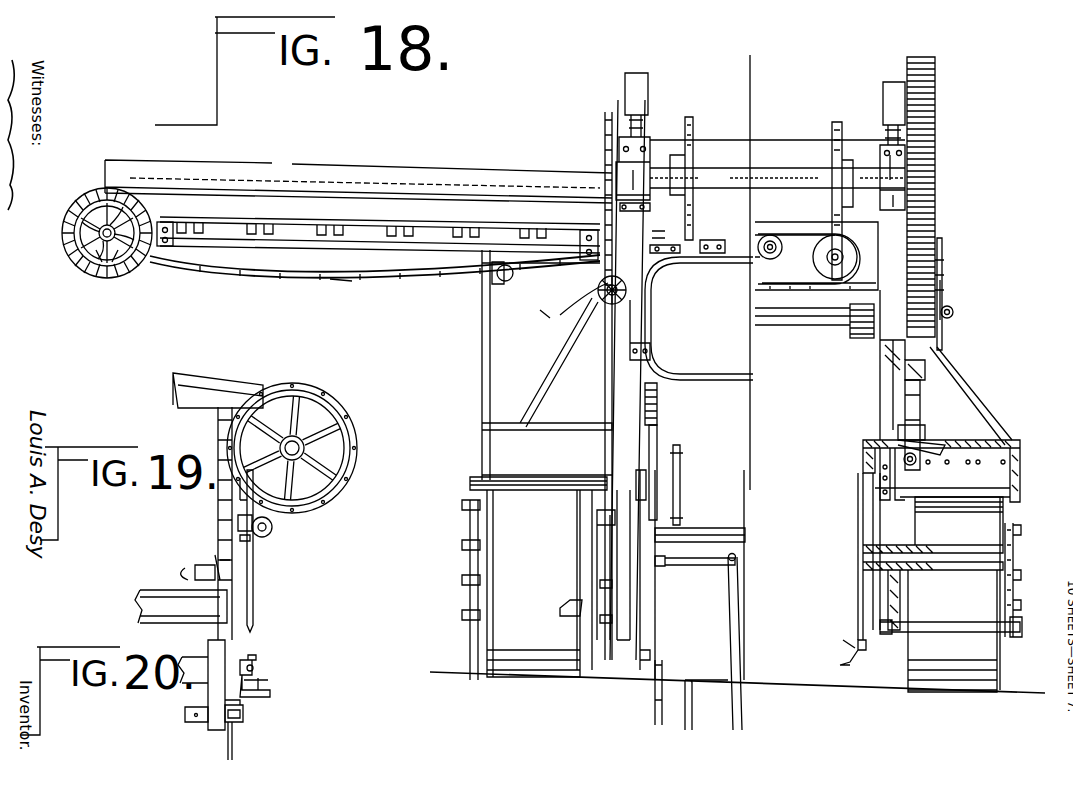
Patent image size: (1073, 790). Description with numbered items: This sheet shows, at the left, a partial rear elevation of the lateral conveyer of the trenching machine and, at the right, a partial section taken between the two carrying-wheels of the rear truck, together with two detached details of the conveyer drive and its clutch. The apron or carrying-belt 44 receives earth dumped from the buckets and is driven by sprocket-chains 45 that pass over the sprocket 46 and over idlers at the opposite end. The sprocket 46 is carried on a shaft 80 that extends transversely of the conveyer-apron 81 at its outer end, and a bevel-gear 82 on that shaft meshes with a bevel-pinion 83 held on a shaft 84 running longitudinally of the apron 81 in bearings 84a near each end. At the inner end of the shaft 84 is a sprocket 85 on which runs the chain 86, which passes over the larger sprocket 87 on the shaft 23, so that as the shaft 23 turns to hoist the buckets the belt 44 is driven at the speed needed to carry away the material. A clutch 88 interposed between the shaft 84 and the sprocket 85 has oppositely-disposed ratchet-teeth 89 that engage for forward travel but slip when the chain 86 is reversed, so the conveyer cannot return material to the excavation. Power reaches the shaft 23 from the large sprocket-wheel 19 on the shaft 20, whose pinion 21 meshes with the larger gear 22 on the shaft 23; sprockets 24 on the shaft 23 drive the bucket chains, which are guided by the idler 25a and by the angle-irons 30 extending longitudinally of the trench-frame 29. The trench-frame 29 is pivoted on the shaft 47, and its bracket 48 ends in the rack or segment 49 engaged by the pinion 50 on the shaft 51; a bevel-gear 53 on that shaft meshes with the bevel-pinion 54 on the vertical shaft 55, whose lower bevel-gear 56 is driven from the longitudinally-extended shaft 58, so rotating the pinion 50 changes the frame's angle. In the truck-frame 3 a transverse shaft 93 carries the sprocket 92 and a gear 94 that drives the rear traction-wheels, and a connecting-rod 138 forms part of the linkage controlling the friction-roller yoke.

In FIG. 18, the truck-frame 3 is at (1018, 612).
In FIG. 18, the large sprocket-wheel 19 is at (944, 262).
In FIG. 18, the shaft 20 is at (952, 308).
In FIG. 18, the pinion 21 is at (946, 300).
In FIG. 18, the gear 22 is at (936, 118).
In FIG. 18, the shaft 23 is at (776, 180).
In FIG. 18, the sprockets 24 is at (689, 115).
In FIG. 18, the idler 25a is at (682, 468).
In FIG. 18, the trench-frame 29 is at (652, 703).
In FIG. 18, the angle-irons 30 is at (668, 726).
In FIG. 18, the apron or carrying-belt 44 is at (246, 274).
In FIG. 18, the sprocket-chains 45 is at (316, 277).
In FIG. 18, the sprocket 46 is at (78, 265).
In FIG. 18, the shaft 47 is at (705, 528).
In FIG. 18, the bracket 48 is at (660, 447).
In FIG. 18, the rack or segment 49 is at (659, 410).
In FIG. 18, the pinion 50 is at (860, 340).
In FIG. 18, the shaft 51 is at (779, 327).
In FIG. 18, the bevel-gear 53 is at (905, 352).
In FIG. 18, the bevel-pinion 54 is at (930, 370).
In FIG. 18, the vertical shaft 55 is at (922, 413).
In FIG. 18, the bevel-gear 56 is at (933, 452).
In FIG. 18, the longitudinally-extended shaft 58 is at (862, 460).
In FIG. 18, the shaft 80 is at (62, 237).
In FIG. 18, the conveyer-apron 81 is at (358, 181).
In FIG. 18, the bevel-gear 82 is at (108, 275).
In FIG. 18, the bevel-pinion 83 is at (166, 250).
In FIG. 18, the shaft 84 is at (291, 247).
In FIG. 18, the bearings 84a is at (170, 223).
In FIG. 20, the bearings 84a is at (240, 722).
In FIG. 18, the sprocket 85 is at (590, 281).
In FIG. 19, the sprocket 85 is at (268, 536).
In FIG. 20, the sprocket 85 is at (270, 682).
In FIG. 19, the chain 86 is at (320, 495).
In FIG. 18, the sprocket 87 is at (602, 150).
In FIG. 19, the sprocket 87 is at (350, 472).
In FIG. 18, the clutch 88 is at (580, 290).
In FIG. 19, the clutch 88 is at (260, 545).
In FIG. 20, the clutch 88 is at (245, 708).
In FIG. 20, the ratchet-teeth 89 is at (215, 727).
In FIG. 18, the sprockets 92 is at (862, 645).
In FIG. 18, the transverse shaft 93 is at (947, 570).
In FIG. 18, the gear 94 is at (917, 520).
In FIG. 18, the connecting-rod 138 is at (925, 445).